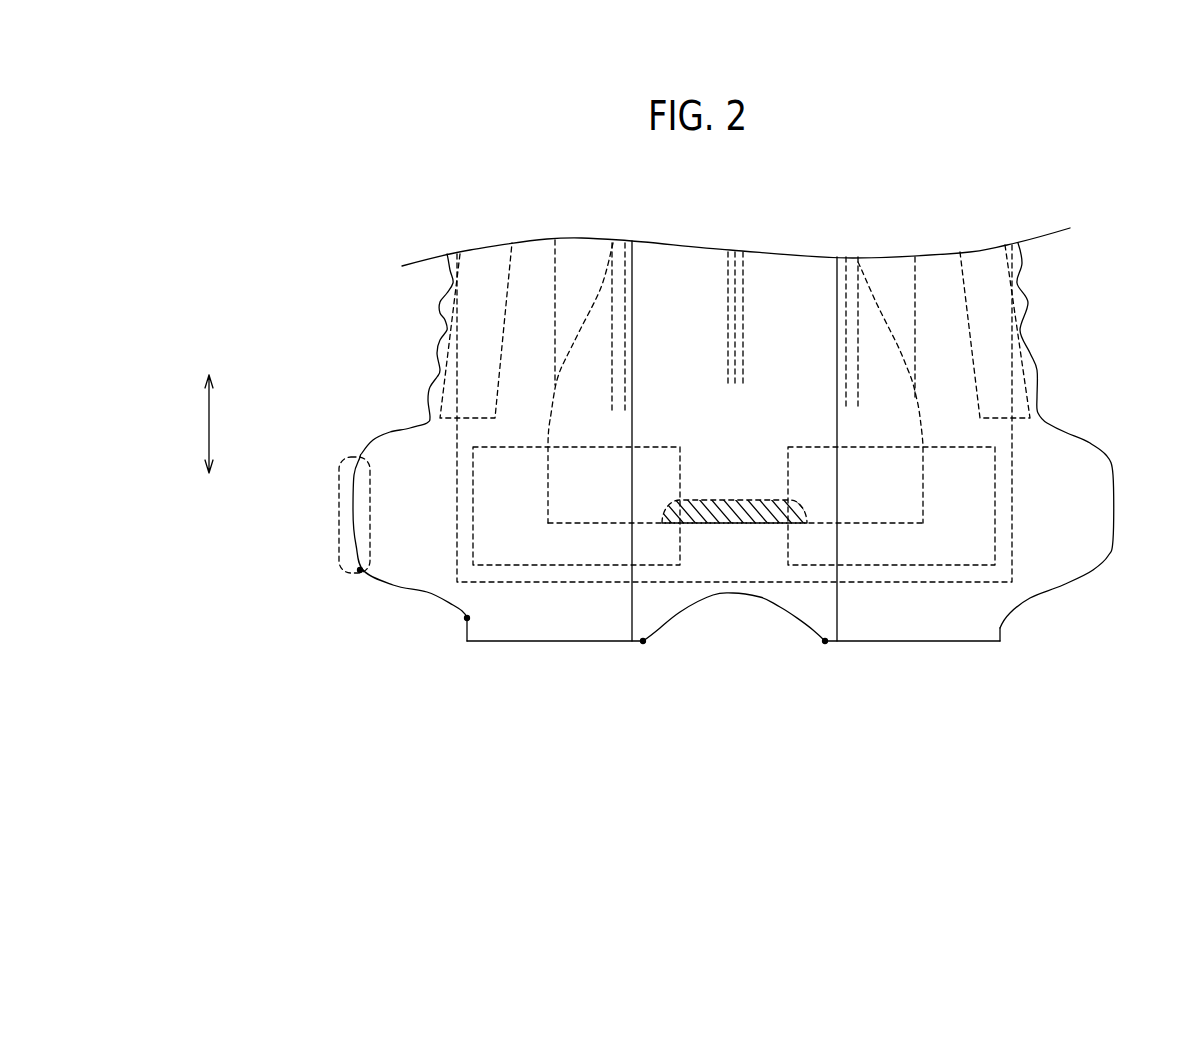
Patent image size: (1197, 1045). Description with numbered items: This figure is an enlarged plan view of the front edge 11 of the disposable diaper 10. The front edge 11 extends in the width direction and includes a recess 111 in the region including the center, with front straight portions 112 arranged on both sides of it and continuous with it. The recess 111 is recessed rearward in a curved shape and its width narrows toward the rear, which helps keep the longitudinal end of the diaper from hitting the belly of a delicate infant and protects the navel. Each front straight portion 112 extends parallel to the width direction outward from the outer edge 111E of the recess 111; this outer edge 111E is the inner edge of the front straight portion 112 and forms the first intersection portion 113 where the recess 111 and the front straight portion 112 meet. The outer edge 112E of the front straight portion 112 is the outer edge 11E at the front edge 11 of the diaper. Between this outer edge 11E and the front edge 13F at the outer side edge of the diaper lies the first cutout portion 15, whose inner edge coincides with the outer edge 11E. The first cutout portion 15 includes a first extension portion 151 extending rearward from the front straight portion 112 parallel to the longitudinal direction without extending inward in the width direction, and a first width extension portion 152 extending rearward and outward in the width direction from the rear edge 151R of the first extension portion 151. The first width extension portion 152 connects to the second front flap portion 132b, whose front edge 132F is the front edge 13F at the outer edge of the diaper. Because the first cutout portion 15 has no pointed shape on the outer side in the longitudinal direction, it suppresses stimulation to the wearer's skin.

The disposable diaper 10 is at (685, 488).
The front edge 11 is at (734, 497).
The outer edge of the front edge 11E is at (405, 676).
The recess 111 is at (722, 595).
The outer edge of the recess 111E is at (643, 643).
The front straight portion 112 is at (552, 641).
The outer edge of the front straight portion 112E is at (1003, 643).
The first intersection portion 113 is at (825, 643).
The front edge at the outer edge of the disposable diaper 13F is at (270, 539).
The front edge of the front flap portion 132F is at (360, 572).
The second front flap portion 132b is at (339, 510).
The first cutout portion 15 is at (375, 624).
The first extension portion 151 is at (466, 626).
The rear edge of the first extension portion 151R is at (465, 619).
The first width extension portion 152 is at (407, 585).